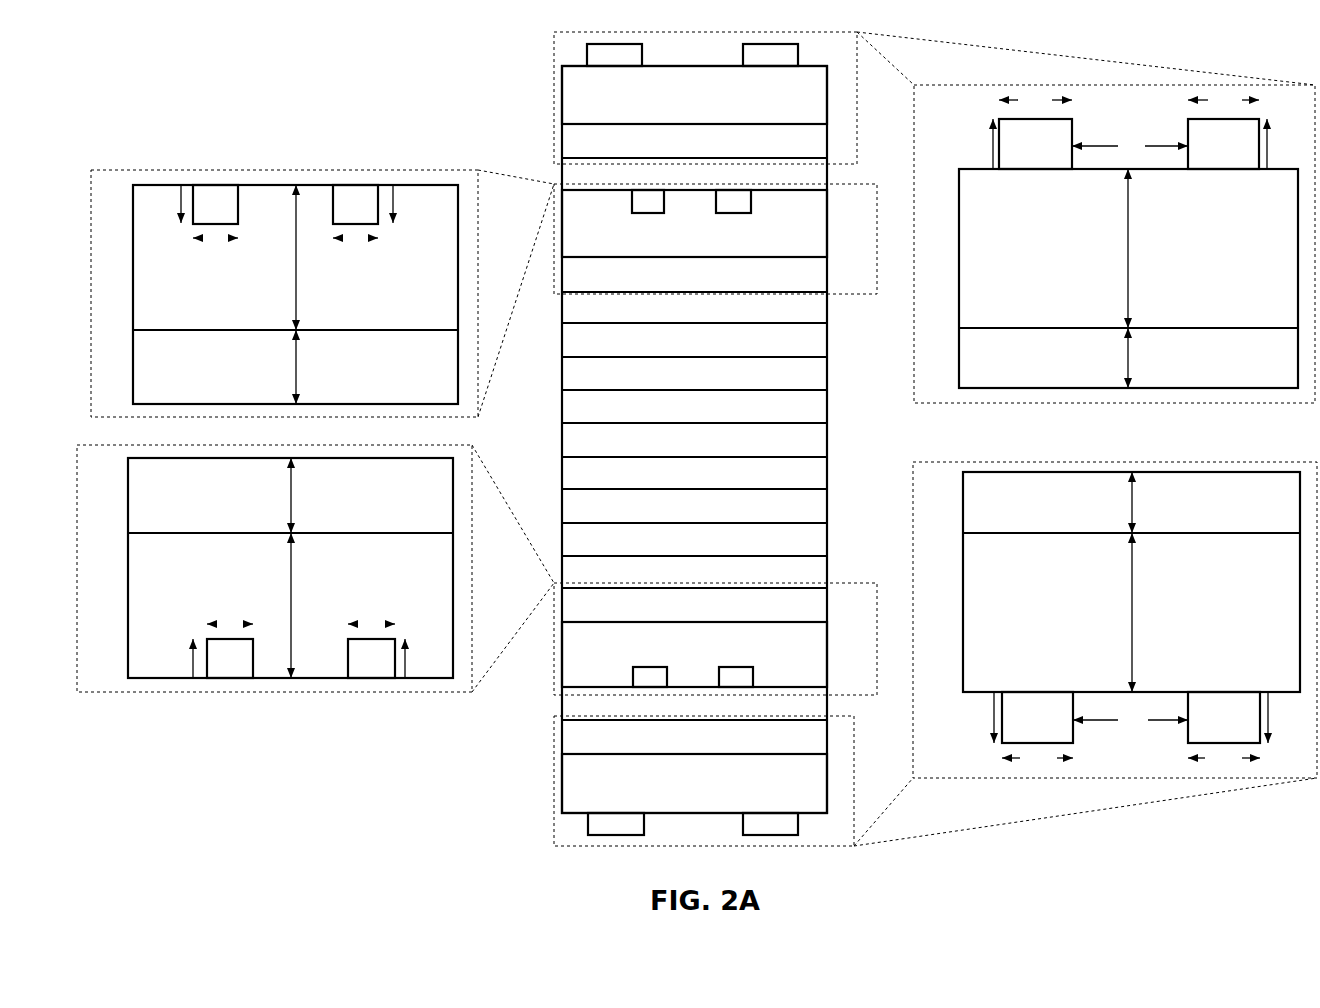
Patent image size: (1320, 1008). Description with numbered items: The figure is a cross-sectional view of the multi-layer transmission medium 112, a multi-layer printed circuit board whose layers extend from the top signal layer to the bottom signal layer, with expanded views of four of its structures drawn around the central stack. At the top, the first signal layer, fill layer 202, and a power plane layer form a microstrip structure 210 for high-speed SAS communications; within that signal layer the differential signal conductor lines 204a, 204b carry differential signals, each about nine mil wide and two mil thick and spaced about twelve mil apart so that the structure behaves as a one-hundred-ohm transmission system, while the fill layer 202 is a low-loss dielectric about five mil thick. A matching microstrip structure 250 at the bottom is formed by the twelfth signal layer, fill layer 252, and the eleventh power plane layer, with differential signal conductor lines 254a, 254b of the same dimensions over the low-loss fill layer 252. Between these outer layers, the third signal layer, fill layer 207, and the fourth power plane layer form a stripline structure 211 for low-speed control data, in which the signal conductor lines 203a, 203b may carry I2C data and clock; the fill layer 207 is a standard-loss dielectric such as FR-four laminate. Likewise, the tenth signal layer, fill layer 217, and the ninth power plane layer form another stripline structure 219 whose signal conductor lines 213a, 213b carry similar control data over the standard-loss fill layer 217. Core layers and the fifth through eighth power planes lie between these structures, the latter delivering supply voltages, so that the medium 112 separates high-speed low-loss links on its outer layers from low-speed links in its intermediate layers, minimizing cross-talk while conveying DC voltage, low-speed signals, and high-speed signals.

The multi-layer transmission medium 112 is at (428, 72).
The fill layer 202 is at (706, 108).
The differential signal conductor line 204a is at (613, 60).
The differential signal conductor line 204b is at (773, 57).
The microstrip structure 210 is at (551, 120).
The fill layer 207 is at (706, 241).
The signal conductor line 203a is at (645, 207).
The signal conductor line 203b is at (737, 207).
The stripline structure 211 is at (550, 280).
The fill layer 217 is at (706, 651).
The signal conductor line 213a is at (648, 677).
The signal conductor line 213b is at (736, 677).
The stripline structure 219 is at (549, 655).
The fill layer 252 is at (706, 790).
The differential signal conductor line 254a is at (605, 825).
The differential signal conductor line 254b is at (763, 825).
The microstrip structure 250 is at (552, 802).